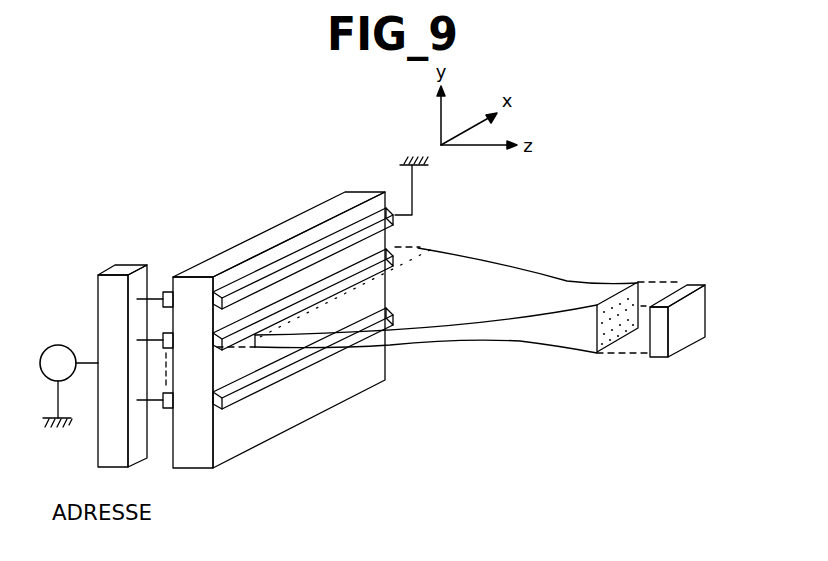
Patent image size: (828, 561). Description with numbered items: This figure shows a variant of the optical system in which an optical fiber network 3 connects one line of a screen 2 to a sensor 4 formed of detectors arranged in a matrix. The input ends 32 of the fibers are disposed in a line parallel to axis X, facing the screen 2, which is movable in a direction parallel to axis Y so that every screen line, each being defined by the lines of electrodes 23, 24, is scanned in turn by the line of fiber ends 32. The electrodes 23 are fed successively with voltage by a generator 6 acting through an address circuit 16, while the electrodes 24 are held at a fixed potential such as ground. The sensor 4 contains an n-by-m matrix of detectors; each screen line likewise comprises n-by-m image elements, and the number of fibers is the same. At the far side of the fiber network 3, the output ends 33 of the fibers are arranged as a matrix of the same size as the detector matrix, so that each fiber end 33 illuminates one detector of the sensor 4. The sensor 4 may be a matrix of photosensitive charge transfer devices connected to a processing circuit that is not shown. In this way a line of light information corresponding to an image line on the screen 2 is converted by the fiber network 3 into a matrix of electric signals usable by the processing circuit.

The screen 2 is at (337, 187).
The optical fiber network 3 is at (440, 238).
The sensor 4 is at (693, 290).
The generator 6 is at (60, 345).
The address circuit 16 is at (127, 266).
The electrodes 23 is at (167, 290).
The electrodes 24 is at (257, 280).
The fiber ends 32 is at (420, 247).
The fiber ends 33 is at (645, 276).